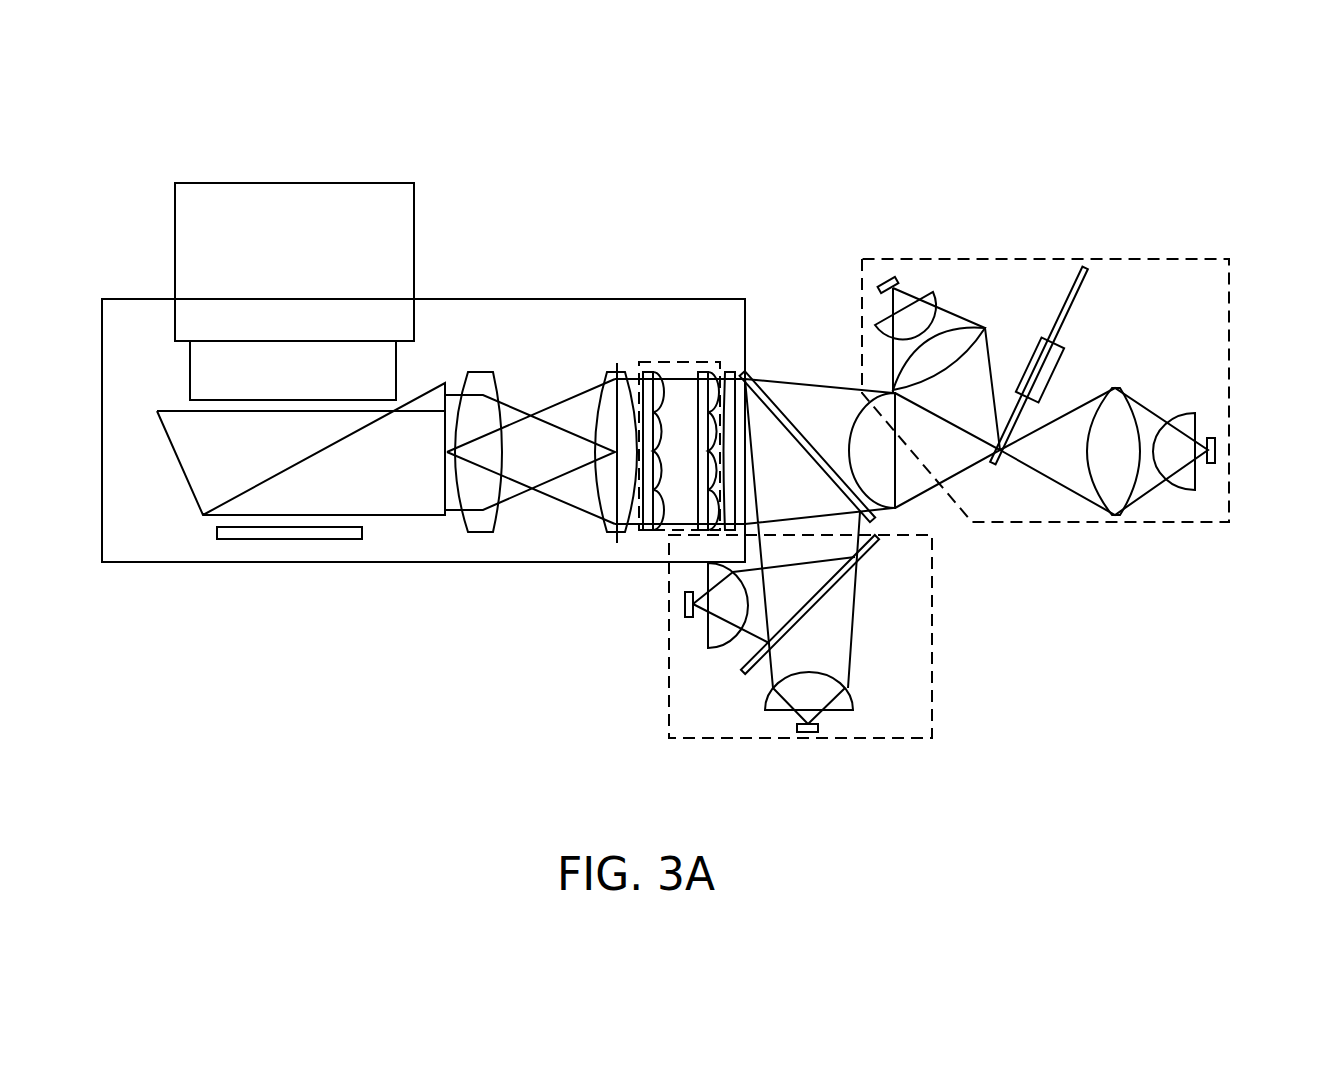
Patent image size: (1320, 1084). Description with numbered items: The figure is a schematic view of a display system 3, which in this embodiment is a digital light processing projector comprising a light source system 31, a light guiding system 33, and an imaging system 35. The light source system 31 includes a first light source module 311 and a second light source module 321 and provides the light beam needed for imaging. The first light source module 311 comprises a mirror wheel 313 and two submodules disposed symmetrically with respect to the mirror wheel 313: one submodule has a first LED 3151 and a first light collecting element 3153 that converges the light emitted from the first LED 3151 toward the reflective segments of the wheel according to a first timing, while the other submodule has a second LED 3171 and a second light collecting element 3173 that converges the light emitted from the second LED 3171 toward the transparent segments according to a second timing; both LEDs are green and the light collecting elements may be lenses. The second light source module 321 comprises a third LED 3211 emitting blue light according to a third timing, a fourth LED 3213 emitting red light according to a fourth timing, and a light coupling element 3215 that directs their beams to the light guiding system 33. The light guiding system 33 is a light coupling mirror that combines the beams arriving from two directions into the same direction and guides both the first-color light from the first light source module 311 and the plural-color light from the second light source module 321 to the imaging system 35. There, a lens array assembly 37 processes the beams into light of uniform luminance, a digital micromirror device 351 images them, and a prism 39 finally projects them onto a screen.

The display system 3 is at (777, 165).
The light source system 31 is at (1009, 536).
The first light source module 311 is at (1180, 259).
The mirror wheel 313 is at (1077, 300).
The first LED 3151 is at (1215, 440).
The first light collecting element 3153 is at (1122, 388).
The second LED 3171 is at (887, 272).
The second light collecting element 3173 is at (965, 325).
The second light source module 321 is at (932, 703).
The third LED 3211 is at (808, 733).
The fourth LED 3213 is at (685, 597).
The light coupling element 3215 is at (863, 557).
The light guiding system 33 is at (787, 398).
The imaging system 35 is at (308, 582).
The digital micromirror device 351 is at (216, 533).
The lens array assembly 37 is at (661, 363).
The prism 39 is at (188, 409).